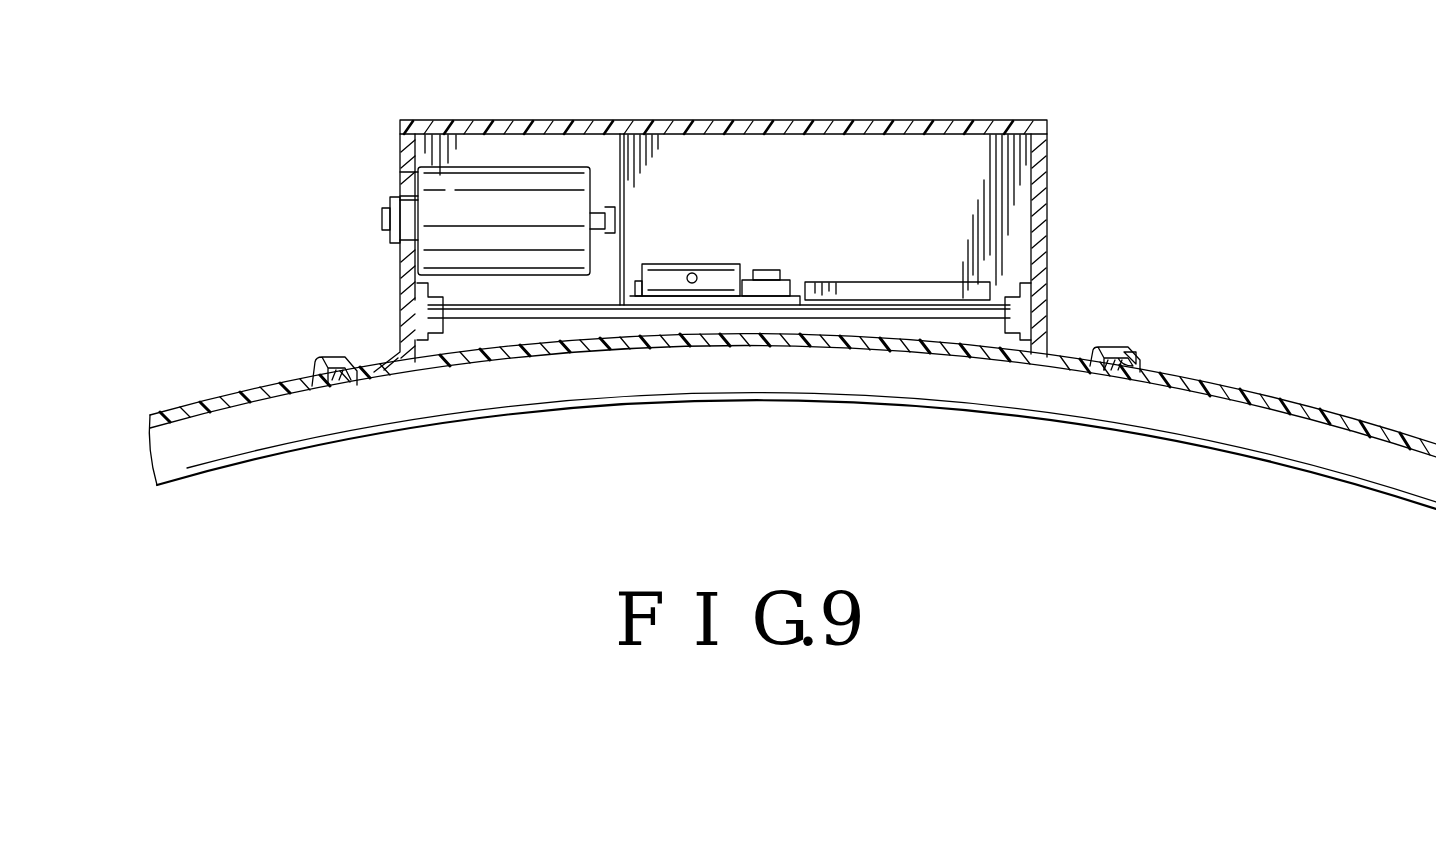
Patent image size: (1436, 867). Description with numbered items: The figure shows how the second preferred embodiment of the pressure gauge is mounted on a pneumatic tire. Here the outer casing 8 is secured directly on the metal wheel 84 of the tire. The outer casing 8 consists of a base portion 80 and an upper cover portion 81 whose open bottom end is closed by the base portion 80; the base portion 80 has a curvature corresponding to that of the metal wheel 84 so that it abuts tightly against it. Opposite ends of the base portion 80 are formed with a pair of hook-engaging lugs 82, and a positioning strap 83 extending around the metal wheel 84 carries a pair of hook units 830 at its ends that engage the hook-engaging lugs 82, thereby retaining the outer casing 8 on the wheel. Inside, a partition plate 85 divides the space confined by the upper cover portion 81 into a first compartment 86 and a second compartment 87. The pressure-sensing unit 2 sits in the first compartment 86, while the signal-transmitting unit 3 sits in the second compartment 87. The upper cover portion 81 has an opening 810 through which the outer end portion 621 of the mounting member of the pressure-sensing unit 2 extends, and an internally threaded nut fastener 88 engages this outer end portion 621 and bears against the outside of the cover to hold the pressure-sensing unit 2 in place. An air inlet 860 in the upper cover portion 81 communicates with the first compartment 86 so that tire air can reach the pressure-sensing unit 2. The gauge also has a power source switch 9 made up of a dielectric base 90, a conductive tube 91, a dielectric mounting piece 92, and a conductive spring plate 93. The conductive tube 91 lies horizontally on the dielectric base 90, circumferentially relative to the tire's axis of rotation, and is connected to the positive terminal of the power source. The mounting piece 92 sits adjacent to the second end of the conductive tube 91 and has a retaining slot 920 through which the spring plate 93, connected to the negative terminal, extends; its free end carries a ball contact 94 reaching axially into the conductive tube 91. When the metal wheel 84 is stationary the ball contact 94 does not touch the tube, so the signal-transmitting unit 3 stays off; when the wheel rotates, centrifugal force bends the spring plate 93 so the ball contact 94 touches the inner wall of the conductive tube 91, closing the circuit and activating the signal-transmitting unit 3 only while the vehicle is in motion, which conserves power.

The pressure-sensing unit 2 is at (554, 160).
The signal-transmitting unit 3 is at (956, 290).
The outer casing 8 is at (682, 197).
The power source switch 9 is at (719, 255).
The base portion 80 is at (727, 337).
The upper cover portion 81 is at (703, 121).
The hook-engaging lugs 82 is at (1073, 352).
The positioning strap 83 is at (1196, 378).
The metal wheel 84 is at (1080, 400).
The partition plate 85 is at (589, 130).
The first compartment 86 is at (496, 150).
The second compartment 87 is at (1000, 167).
The nut fastener 88 is at (396, 252).
The dielectric base 90 is at (780, 299).
The conductive tube 91 is at (647, 262).
The dielectric mounting piece 92 is at (770, 272).
The conductive spring plate 93 is at (746, 278).
The ball contact 94 is at (693, 273).
The opening 810 is at (405, 210).
The hook units 830 is at (1125, 352).
The air inlet 860 is at (412, 182).
The retaining slot 920 is at (790, 272).
The outer end portion 621 is at (393, 226).